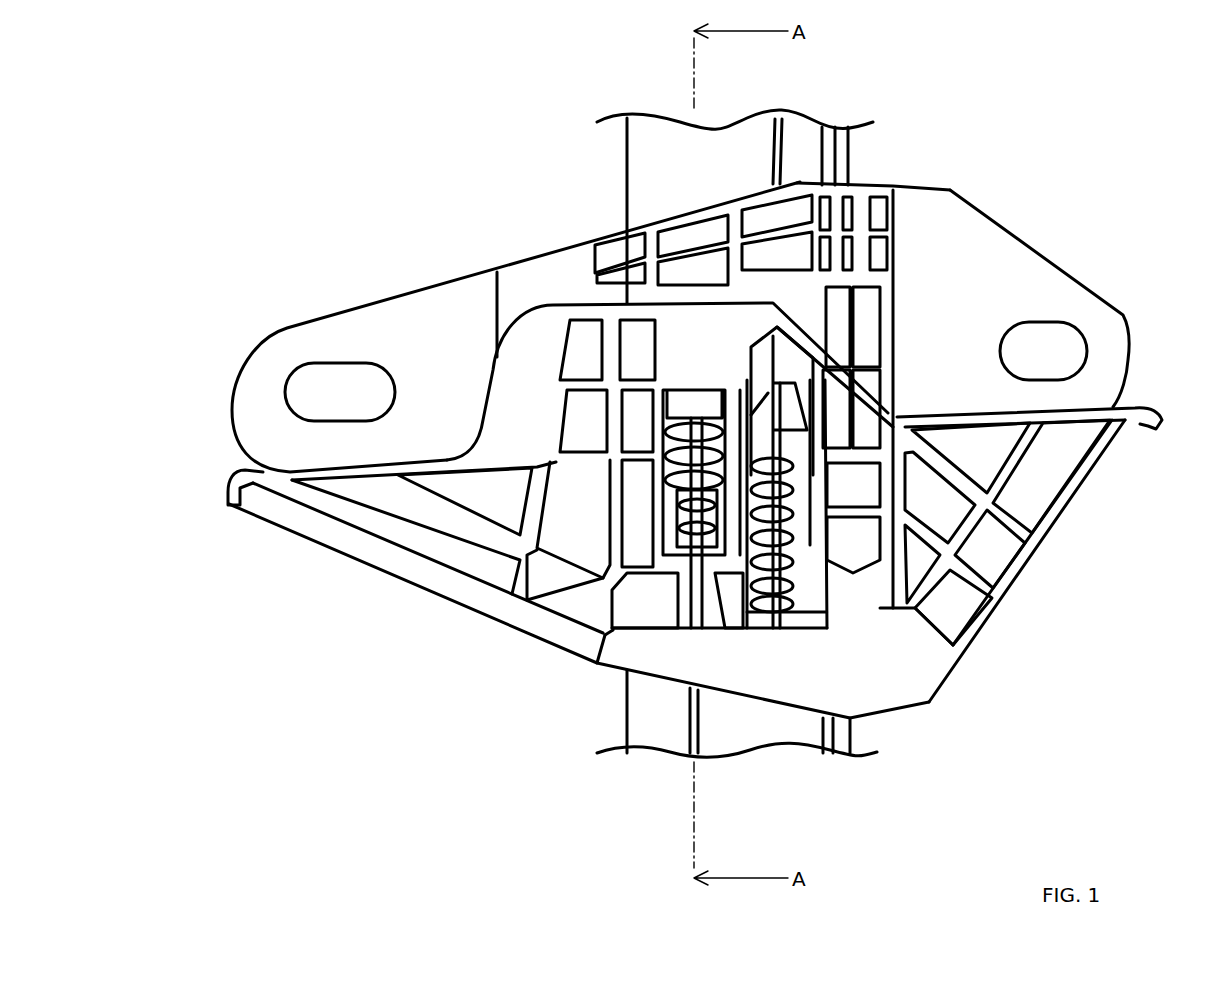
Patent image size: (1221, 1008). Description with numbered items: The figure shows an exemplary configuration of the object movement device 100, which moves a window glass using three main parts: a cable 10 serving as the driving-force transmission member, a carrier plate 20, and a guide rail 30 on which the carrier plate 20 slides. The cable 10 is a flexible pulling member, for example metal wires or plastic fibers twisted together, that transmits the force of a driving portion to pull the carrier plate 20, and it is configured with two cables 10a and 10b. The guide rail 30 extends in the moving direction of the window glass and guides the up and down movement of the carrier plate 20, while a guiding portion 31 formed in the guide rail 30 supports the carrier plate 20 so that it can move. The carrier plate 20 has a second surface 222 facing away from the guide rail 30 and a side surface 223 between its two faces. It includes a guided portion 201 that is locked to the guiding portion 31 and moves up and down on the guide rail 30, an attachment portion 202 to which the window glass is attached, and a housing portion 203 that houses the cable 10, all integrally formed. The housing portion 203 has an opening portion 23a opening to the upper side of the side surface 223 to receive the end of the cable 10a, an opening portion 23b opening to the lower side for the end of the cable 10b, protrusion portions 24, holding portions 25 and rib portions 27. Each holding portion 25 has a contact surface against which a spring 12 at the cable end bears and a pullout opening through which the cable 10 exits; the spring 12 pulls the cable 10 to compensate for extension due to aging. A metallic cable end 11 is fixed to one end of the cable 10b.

The object movement device 100 is at (575, 55).
The guide rail 30 is at (683, 150).
The cable 10 is at (760, 168).
The cable 10a is at (780, 120).
The guiding portion 31 is at (855, 148).
The carrier plate 20 is at (1025, 283).
The attachment portion 202 is at (268, 416).
The second surface 222 is at (490, 402).
The rib portions 27 is at (685, 348).
The opening portion 23b is at (667, 438).
The cable end 11 is at (683, 403).
The holding portions 25 is at (787, 457).
The protrusion portions 24 is at (800, 570).
The spring 12 is at (673, 497).
The side surface 223 is at (1073, 522).
The guided portion 201 is at (875, 673).
The housing portion 203 is at (673, 662).
The cable 10b is at (697, 760).
The opening portion 23a is at (815, 625).